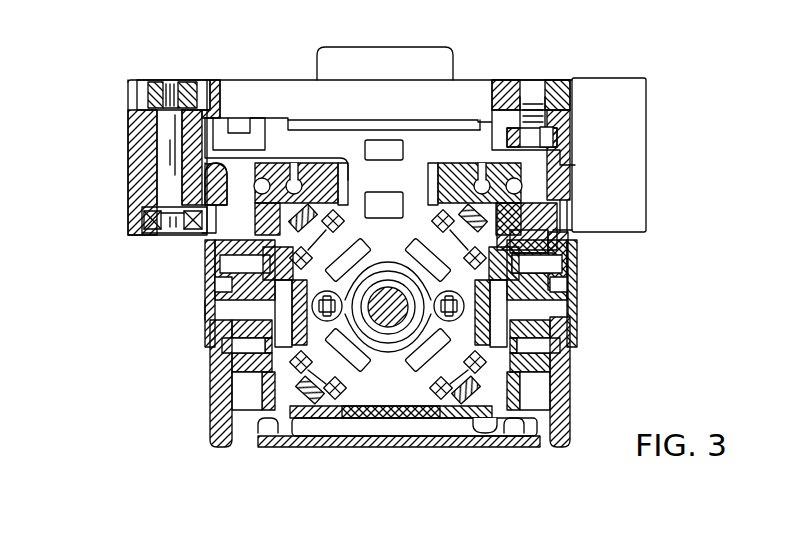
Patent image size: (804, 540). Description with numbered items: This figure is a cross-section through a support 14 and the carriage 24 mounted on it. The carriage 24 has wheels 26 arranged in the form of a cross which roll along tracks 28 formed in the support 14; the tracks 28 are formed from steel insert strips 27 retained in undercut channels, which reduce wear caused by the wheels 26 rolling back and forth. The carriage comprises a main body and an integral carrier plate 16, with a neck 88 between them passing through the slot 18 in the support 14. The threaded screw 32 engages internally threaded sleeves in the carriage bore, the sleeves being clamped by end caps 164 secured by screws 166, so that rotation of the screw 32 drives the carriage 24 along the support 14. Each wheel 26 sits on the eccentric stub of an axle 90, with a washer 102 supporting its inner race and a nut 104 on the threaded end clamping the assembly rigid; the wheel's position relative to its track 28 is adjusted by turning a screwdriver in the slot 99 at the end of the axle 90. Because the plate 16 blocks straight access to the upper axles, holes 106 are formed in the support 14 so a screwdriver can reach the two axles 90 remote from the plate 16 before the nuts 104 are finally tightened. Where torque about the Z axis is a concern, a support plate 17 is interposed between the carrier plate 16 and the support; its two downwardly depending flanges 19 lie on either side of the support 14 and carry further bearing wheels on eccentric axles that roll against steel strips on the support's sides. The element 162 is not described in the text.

The support 14 is at (575, 166).
The carrier plate 16 is at (497, 135).
The support plate 17 is at (262, 96).
The slot 18 is at (345, 160).
The flanges 19 is at (128, 185).
The carriage 24 is at (520, 125).
The wheels 26 is at (432, 396).
The steel insert strips 27 is at (295, 262).
The tracks 28 is at (300, 278).
The screw 32 is at (462, 302).
The neck 88 is at (374, 180).
The axles 90 is at (295, 405).
The screwdriver slot 99 is at (495, 400).
The washer 102 is at (455, 402).
The nut 104 is at (466, 420).
The holes 106 is at (258, 442).
The guide block 162 is at (393, 256).
The end caps 164 is at (510, 360).
The screws 166 is at (320, 315).